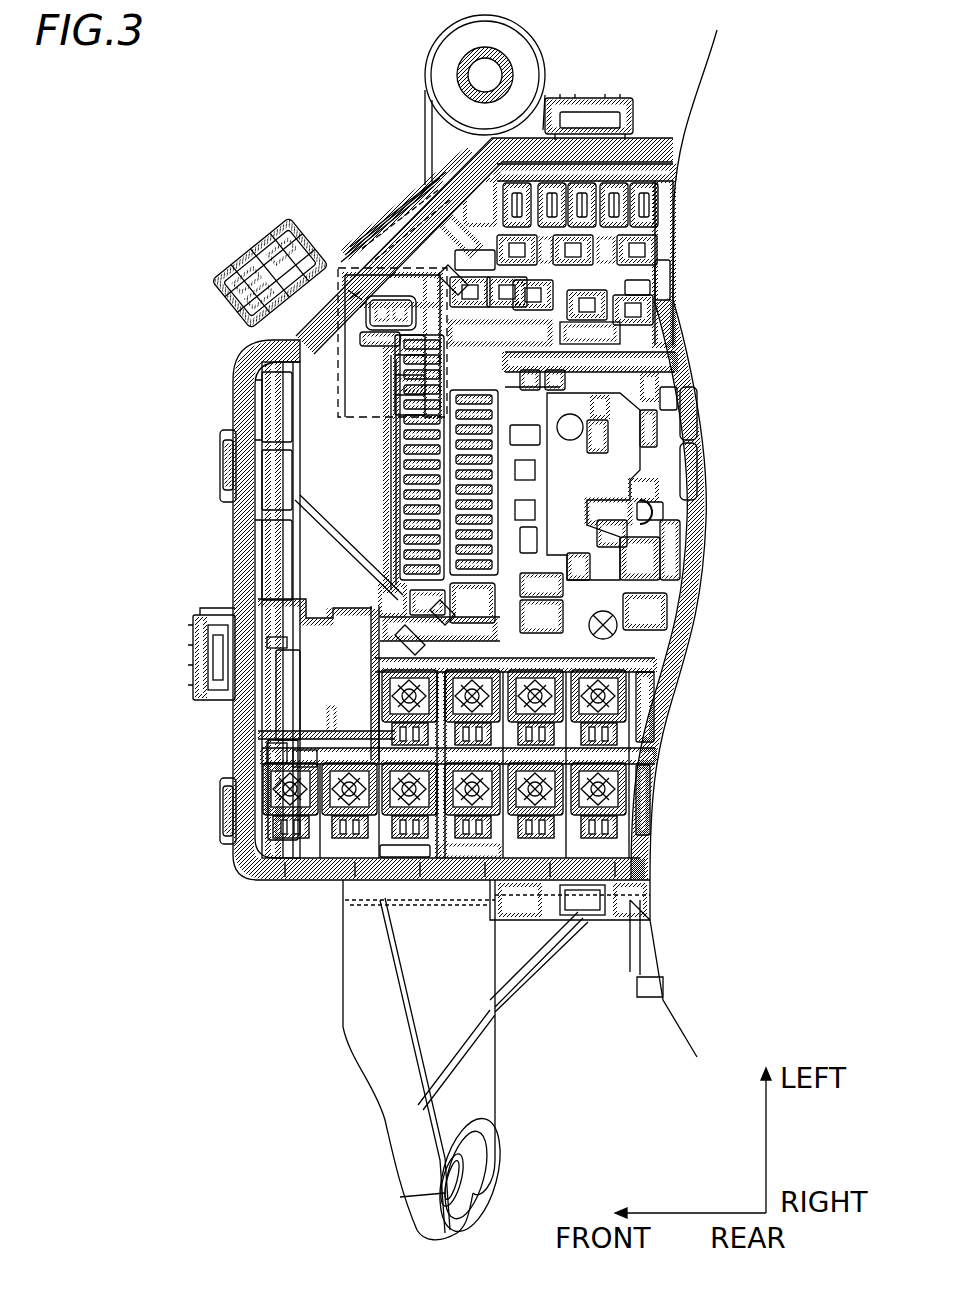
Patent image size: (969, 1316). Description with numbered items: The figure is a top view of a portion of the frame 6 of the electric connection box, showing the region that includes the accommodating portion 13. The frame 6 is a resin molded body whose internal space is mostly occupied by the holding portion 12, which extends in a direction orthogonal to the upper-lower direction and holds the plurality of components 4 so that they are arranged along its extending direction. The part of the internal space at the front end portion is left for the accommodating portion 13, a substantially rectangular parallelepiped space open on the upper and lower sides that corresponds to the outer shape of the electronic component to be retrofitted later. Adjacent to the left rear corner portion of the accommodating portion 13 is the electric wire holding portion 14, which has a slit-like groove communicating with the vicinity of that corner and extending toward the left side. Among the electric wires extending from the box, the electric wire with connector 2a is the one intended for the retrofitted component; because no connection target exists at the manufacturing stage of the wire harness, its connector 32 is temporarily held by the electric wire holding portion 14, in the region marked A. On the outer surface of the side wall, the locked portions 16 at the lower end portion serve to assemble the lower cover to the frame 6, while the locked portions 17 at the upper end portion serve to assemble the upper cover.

The electric wire with connector 2a is at (390, 292).
The component 4 is at (583, 270).
The frame 6 is at (218, 540).
The holding portion 12 is at (640, 367).
The accommodating portion 13 is at (322, 440).
The electric wire holding portion 14 is at (388, 346).
The locked portion 16 is at (222, 460).
The locked portion 17 is at (584, 105).
The connector 32 is at (377, 293).
The wire harness connector A is at (330, 293).